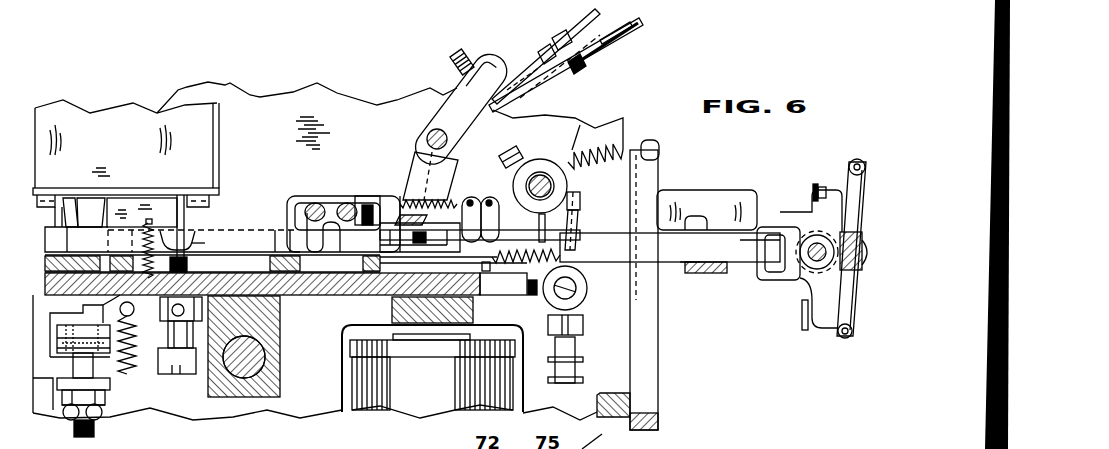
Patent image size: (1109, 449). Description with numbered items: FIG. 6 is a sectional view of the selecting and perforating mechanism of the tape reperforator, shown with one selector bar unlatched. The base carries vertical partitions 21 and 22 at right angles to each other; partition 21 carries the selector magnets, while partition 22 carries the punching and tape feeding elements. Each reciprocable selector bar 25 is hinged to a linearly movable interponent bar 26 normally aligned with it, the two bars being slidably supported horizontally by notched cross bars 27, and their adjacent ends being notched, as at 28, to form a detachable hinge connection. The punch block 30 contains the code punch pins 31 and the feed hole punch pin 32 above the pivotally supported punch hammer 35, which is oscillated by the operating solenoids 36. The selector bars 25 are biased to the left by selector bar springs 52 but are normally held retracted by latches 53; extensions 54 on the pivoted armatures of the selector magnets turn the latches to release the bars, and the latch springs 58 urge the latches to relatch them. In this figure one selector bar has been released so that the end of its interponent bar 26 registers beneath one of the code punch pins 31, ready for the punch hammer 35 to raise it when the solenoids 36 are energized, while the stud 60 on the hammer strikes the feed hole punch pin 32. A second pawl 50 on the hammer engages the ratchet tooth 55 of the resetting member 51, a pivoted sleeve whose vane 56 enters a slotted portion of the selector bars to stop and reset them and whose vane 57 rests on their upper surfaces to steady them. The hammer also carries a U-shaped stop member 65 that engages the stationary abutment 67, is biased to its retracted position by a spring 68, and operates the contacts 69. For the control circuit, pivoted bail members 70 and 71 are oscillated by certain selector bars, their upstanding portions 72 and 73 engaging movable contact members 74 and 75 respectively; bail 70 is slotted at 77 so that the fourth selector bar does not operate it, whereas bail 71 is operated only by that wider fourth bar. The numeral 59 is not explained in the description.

The vertical partition 21 is at (600, 395).
The vertical partition 22 is at (322, 410).
The selector bar 25 is at (636, 258).
The interponent bar 26 is at (245, 233).
The cross bar 27 is at (112, 250).
The notch 28 is at (312, 208).
The punch block 30 is at (70, 110).
The code punch pin 31 is at (53, 218).
The feed hole punch pin 32 is at (187, 225).
The punch hammer 35 is at (45, 283).
The operating solenoid 36 is at (415, 412).
The second pawl 50 is at (578, 206).
The resetting member 51 is at (540, 159).
The selector bar spring 52 is at (385, 198).
The latch 53 is at (792, 281).
The armature extension 54 is at (813, 192).
The ratchet tooth 55 is at (580, 186).
The vane 56 is at (539, 231).
The vane 57 is at (578, 222).
The latch spring 58 is at (851, 158).
The spring 59 is at (590, 150).
The stud 60 is at (206, 233).
The U-shaped stop member 65 is at (33, 408).
The stationary abutment 67 is at (112, 385).
The spring 68 is at (131, 372).
The contacts 69 is at (580, 330).
The bail member 70 is at (448, 180).
The bail member 71 is at (410, 165).
The upstanding portion 72 is at (490, 70).
The upstanding portion 73 is at (463, 88).
The movable contact member 74 is at (518, 70).
The movable contact member 75 is at (512, 103).
The slot 77 is at (437, 236).